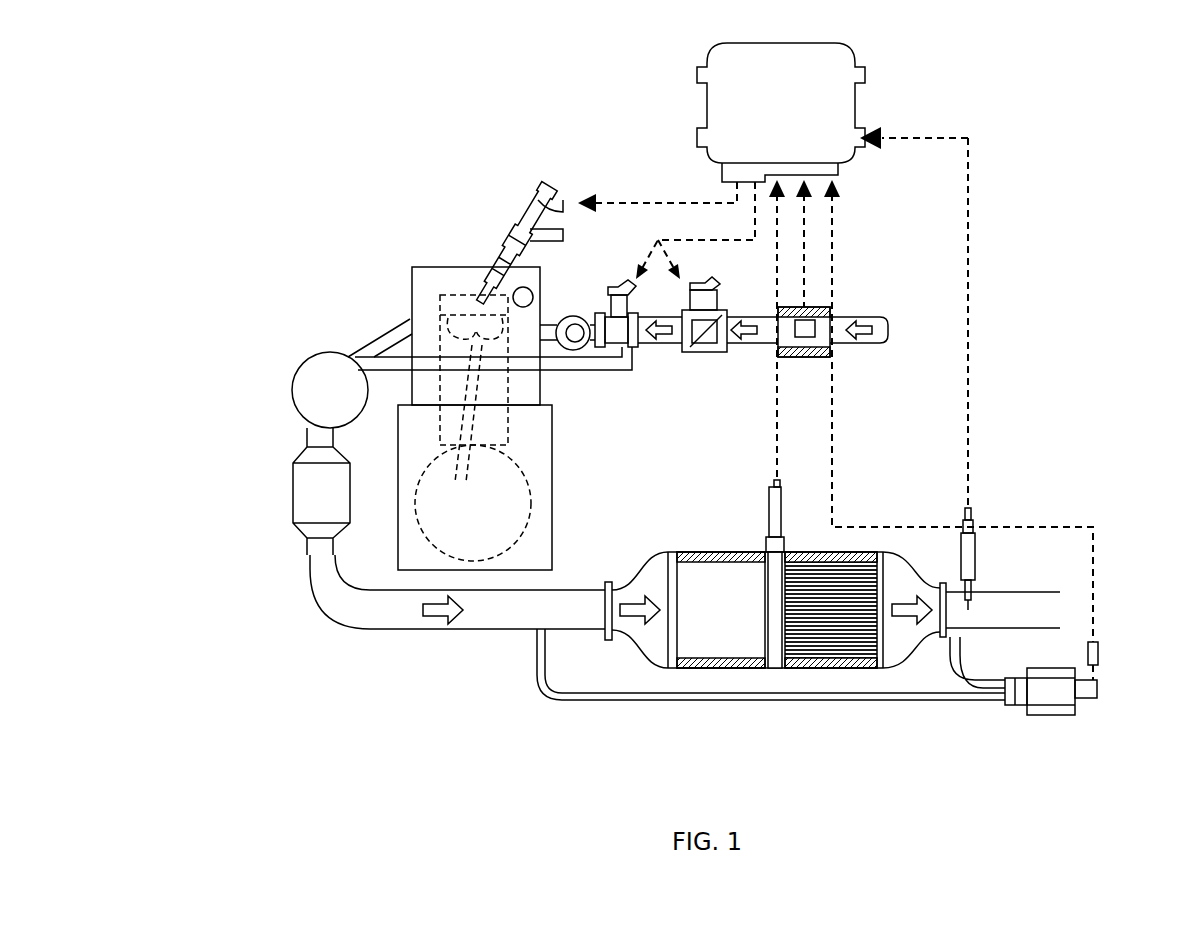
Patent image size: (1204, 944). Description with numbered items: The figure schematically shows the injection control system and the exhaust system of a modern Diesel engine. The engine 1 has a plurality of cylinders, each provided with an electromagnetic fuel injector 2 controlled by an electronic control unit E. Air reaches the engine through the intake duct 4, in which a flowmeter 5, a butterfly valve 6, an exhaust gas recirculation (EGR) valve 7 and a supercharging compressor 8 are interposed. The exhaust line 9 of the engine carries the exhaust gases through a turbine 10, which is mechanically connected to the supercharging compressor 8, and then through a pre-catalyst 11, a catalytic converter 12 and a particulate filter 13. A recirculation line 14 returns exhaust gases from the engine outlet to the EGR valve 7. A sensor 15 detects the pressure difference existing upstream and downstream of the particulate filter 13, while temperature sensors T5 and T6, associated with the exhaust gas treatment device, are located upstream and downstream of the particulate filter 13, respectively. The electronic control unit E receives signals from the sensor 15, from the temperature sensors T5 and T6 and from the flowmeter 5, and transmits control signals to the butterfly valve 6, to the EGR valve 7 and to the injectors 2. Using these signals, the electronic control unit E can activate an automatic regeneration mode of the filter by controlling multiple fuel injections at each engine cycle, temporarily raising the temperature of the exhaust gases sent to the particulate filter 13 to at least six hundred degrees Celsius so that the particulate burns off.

The engine 1 is at (428, 243).
The electromagnetic fuel injector 2 is at (508, 222).
The intake duct 4 is at (887, 312).
The flowmeter 5 is at (822, 355).
The butterfly valve 6 is at (702, 356).
The exhaust gas recirculation (EGR) valve 7 is at (630, 347).
The supercharging compressor 8 is at (578, 305).
The exhaust line 9 is at (383, 327).
The turbine 10 is at (297, 360).
The pre-catalyst 11 is at (290, 488).
The catalytic converter 12 is at (737, 672).
The particulate filter 13 is at (852, 672).
The exhaust gas recirculation line 14 is at (565, 375).
The pressure difference sensor 15 is at (1055, 695).
The electronic control unit E is at (862, 105).
The upstream temperature sensor T5 is at (763, 518).
The downstream temperature sensor T6 is at (988, 580).